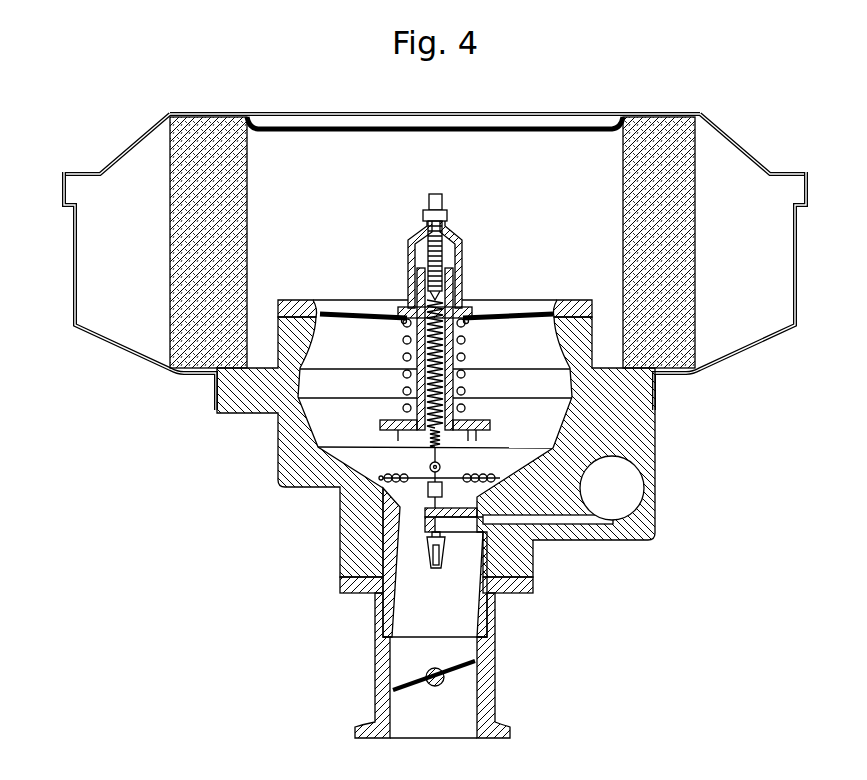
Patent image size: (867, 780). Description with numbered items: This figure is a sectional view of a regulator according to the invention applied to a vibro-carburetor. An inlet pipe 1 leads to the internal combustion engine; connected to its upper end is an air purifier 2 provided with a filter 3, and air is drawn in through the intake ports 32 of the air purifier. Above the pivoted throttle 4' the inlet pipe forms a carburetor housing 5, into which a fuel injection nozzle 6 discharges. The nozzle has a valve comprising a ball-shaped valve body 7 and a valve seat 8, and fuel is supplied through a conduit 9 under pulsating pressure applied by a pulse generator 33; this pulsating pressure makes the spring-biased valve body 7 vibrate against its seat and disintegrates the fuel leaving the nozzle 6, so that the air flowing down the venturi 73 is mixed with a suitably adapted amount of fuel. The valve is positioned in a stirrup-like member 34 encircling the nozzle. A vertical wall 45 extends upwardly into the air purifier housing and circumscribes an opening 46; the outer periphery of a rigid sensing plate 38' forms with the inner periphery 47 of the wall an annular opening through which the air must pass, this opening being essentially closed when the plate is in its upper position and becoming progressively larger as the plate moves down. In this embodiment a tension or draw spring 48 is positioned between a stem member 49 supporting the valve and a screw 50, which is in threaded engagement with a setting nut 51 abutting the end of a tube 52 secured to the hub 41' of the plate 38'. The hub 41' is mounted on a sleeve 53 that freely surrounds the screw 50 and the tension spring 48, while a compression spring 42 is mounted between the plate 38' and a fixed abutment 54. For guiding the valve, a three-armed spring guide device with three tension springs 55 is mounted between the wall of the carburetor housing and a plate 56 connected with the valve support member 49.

The inlet pipe 1 is at (383, 672).
The air purifier 2 is at (117, 348).
The filter 3 is at (240, 154).
The throttle 4' is at (434, 693).
The carburetor housing 5 is at (352, 524).
The fuel injection nozzle 6 is at (430, 503).
The valve body 7 is at (431, 538).
The valve seat 8 is at (443, 532).
The conduit 9 is at (545, 520).
The intake ports 32 is at (78, 188).
The pulse generator 33 is at (635, 487).
The stirrup-like member 34 is at (440, 567).
The plate 38' is at (436, 336).
The hub 41' is at (420, 298).
The compression spring 42 is at (462, 384).
The vertical wall 45 is at (300, 300).
The opening 46 is at (358, 307).
The inner periphery 47 is at (312, 347).
The tension spring 48 is at (405, 384).
The stem member 49 is at (440, 467).
The screw 50 is at (445, 256).
The setting nut 51 is at (442, 212).
The tube 52 is at (463, 244).
The sleeve 53 is at (458, 411).
The fixed abutment 54 is at (382, 426).
The tension springs 55 is at (388, 476).
The plate 56 is at (421, 466).
The venturi 73 is at (402, 614).